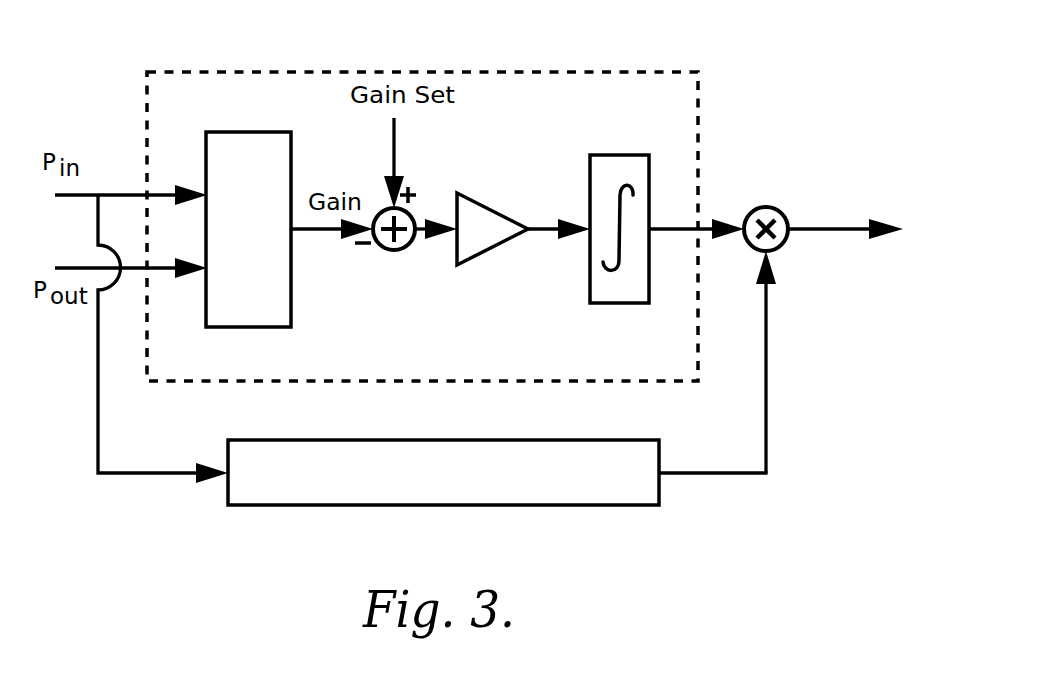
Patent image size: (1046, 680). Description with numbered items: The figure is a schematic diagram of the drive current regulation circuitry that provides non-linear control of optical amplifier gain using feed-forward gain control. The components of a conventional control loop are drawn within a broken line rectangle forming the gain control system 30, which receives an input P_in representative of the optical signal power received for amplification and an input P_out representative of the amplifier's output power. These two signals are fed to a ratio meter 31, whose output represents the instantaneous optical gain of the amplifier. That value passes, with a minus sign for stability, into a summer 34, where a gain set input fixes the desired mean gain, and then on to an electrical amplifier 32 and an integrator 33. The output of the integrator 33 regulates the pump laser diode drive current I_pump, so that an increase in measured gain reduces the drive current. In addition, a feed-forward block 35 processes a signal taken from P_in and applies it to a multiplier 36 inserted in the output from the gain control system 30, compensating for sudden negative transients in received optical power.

The gain control system 30 is at (625, 72).
The ratio meter 31 is at (263, 165).
The electrical amplifier 32 is at (490, 227).
The integrator 33 is at (625, 165).
The summer 34 is at (400, 243).
The feed-forward block 35 is at (597, 452).
The multiplier 36 is at (773, 247).